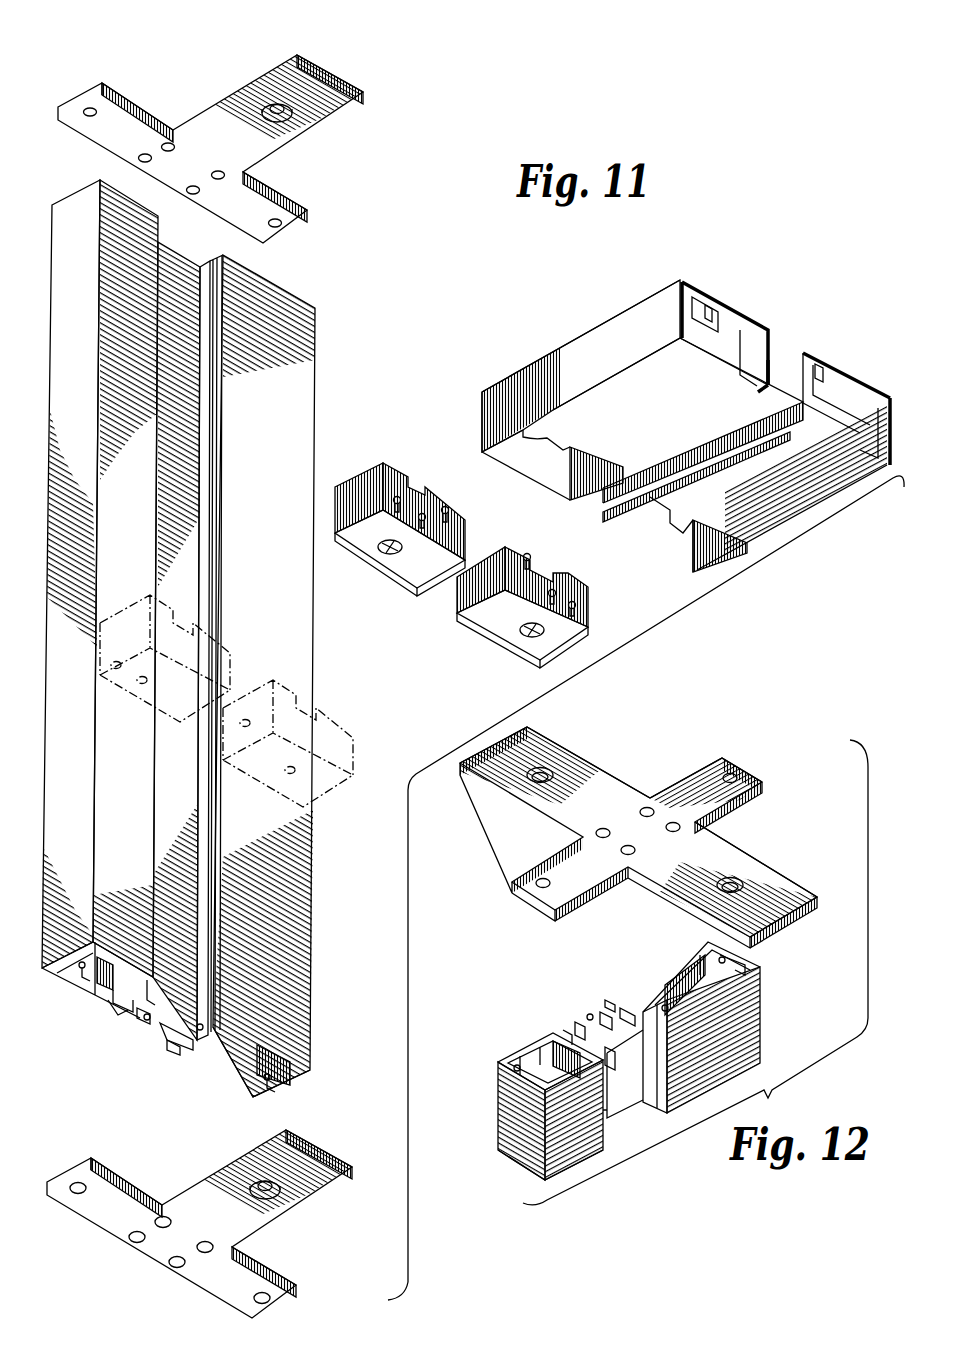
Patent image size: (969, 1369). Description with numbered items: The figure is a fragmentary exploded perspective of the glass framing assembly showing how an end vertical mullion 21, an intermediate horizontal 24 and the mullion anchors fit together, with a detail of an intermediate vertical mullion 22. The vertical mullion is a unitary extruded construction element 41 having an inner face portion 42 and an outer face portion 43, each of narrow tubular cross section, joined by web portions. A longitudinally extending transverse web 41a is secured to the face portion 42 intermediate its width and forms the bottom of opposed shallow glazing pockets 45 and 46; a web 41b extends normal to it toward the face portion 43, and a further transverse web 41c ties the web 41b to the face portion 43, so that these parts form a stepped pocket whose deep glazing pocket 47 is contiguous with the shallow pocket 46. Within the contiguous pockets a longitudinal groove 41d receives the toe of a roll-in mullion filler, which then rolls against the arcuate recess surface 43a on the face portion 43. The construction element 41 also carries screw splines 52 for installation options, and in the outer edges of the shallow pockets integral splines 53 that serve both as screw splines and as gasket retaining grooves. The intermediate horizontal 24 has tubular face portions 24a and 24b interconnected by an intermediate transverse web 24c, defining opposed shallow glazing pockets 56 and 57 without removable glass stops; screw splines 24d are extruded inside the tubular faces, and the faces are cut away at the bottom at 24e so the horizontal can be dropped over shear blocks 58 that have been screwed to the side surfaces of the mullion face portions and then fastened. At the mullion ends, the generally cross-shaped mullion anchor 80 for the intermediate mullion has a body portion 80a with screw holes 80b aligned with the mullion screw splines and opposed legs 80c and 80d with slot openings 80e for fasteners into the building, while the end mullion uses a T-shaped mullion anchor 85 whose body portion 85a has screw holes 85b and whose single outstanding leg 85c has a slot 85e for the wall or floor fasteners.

In FIG. 11, the vertical mullion 21 is at (321, 416).
In FIG. 12, the vertical mullion 22 is at (516, 1175).
In FIG. 11, the intermediate horizontal 24 is at (553, 350).
In FIG. 11, the tubular face portion 24a is at (672, 307).
In FIG. 11, the tubular face portion 24b is at (892, 410).
In FIG. 11, the intermediate transverse web 24c is at (806, 352).
In FIG. 11, the screw spline 24d is at (712, 305).
In FIG. 11, the cut-away 24e is at (558, 452).
In FIG. 11, the construction element 41 is at (75, 383).
In FIG. 12, the construction element 41 is at (745, 1018).
In FIG. 11, the transverse web portion 41a is at (160, 1025).
In FIG. 12, the transverse web portion 41a is at (625, 1008).
In FIG. 11, the web 41b is at (150, 1020).
In FIG. 12, the web 41b is at (610, 1017).
In FIG. 11, the transversely extending web 41c is at (102, 1003).
In FIG. 11, the groove 41d is at (147, 1000).
In FIG. 12, the groove 41d is at (580, 1027).
In FIG. 11, the inner face portion 42 is at (295, 1077).
In FIG. 12, the inner face portion 42 is at (745, 968).
In FIG. 11, the outer face portion 43 is at (60, 962).
In FIG. 12, the outer face portion 43 is at (520, 1063).
In FIG. 11, the recess surface 43a is at (143, 977).
In FIG. 12, the recess surface 43a is at (610, 1047).
In FIG. 11, the shallow glazing pocket 45 is at (160, 1040).
In FIG. 12, the shallow glazing pocket 45 is at (610, 1003).
In FIG. 11, the shallow glazing pocket 46 is at (183, 257).
In FIG. 12, the shallow glazing pocket 46 is at (633, 1112).
In FIG. 11, the deep glazing pocket 47 is at (110, 1008).
In FIG. 12, the deep glazing pocket 47 is at (567, 1033).
In FIG. 11, the screw spline 52 is at (78, 963).
In FIG. 12, the screw spline 52 is at (517, 1071).
In FIG. 11, the spline 53 is at (145, 1019).
In FIG. 12, the spline 53 is at (665, 1005).
In FIG. 11, the shallow glazing pocket 56 is at (772, 345).
In FIG. 11, the shallow glazing pocket 57 is at (596, 515).
In FIG. 11, the shear block 58 is at (410, 573).
In FIG. 12, the mullion anchor 80 is at (600, 755).
In FIG. 12, the body portion 80a is at (663, 797).
In FIG. 12, the screw hole 80b is at (728, 775).
In FIG. 12, the leg 80c is at (560, 755).
In FIG. 12, the leg 80d is at (777, 883).
In FIG. 12, the slot 80e is at (540, 777).
In FIG. 11, the mullion anchor 85 is at (328, 124).
In FIG. 11, the body portion 85a is at (294, 222).
In FIG. 11, the screw hole 85b is at (88, 116).
In FIG. 11, the outstanding leg 85c is at (322, 90).
In FIG. 11, the slot 85e is at (275, 104).